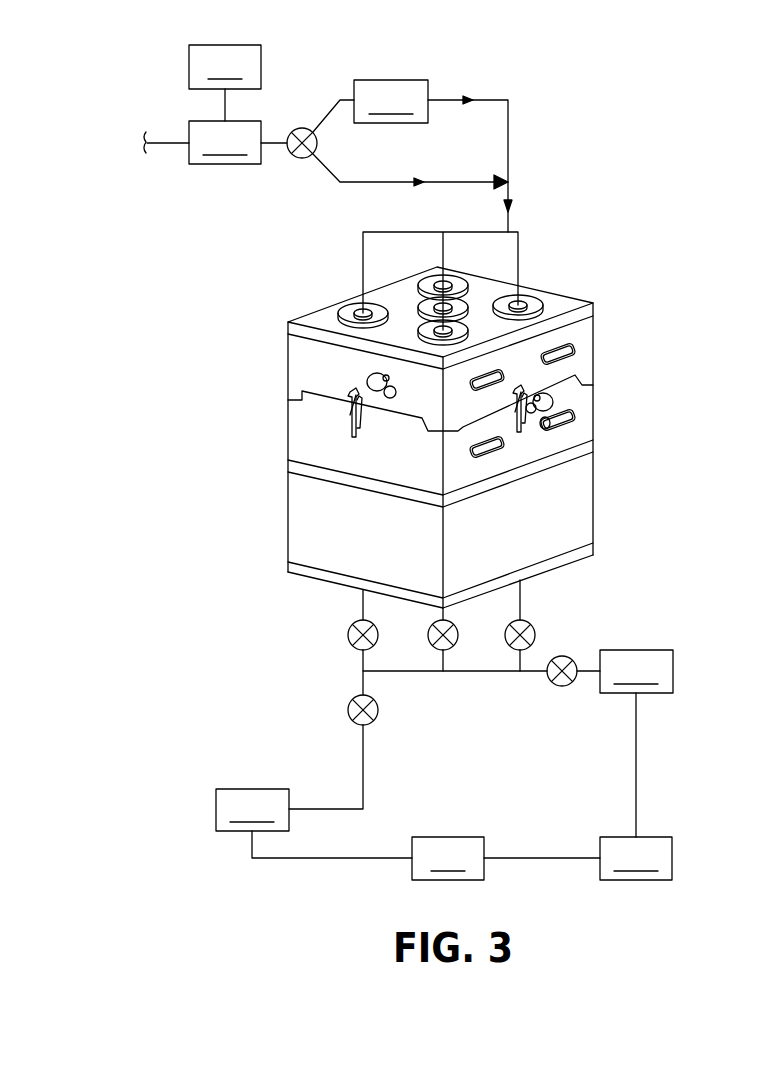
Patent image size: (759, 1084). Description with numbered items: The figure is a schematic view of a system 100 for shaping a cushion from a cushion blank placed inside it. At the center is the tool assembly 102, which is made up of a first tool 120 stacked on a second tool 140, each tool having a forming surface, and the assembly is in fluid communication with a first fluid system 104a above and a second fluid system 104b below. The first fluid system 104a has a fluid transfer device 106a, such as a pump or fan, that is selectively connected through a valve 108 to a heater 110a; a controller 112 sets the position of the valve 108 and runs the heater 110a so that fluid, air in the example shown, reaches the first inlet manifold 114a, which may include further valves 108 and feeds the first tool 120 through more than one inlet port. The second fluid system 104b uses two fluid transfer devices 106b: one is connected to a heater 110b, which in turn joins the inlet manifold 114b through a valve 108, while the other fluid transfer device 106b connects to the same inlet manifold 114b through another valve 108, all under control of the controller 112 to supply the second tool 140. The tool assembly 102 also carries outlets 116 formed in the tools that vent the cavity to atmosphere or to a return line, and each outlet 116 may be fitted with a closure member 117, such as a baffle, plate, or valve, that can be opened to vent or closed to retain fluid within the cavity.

The system 100 is at (421, 437).
The tool assembly 102 is at (224, 356).
The first fluid system 104a is at (384, 462).
The second fluid system 104b is at (419, 730).
The fluid transfer device 106a is at (225, 126).
The fluid transfer device 106b is at (444, 834).
The valve 108 is at (294, 129).
The heater 110a is at (391, 101).
The heater 110b is at (636, 671).
The controller 112 is at (336, 462).
The first inlet manifold 114a is at (545, 232).
The inlet manifold 114b is at (491, 700).
The outlet 116 is at (387, 395).
The closure member 117 is at (368, 378).
The first tool 120 is at (587, 342).
The second tool 140 is at (580, 507).